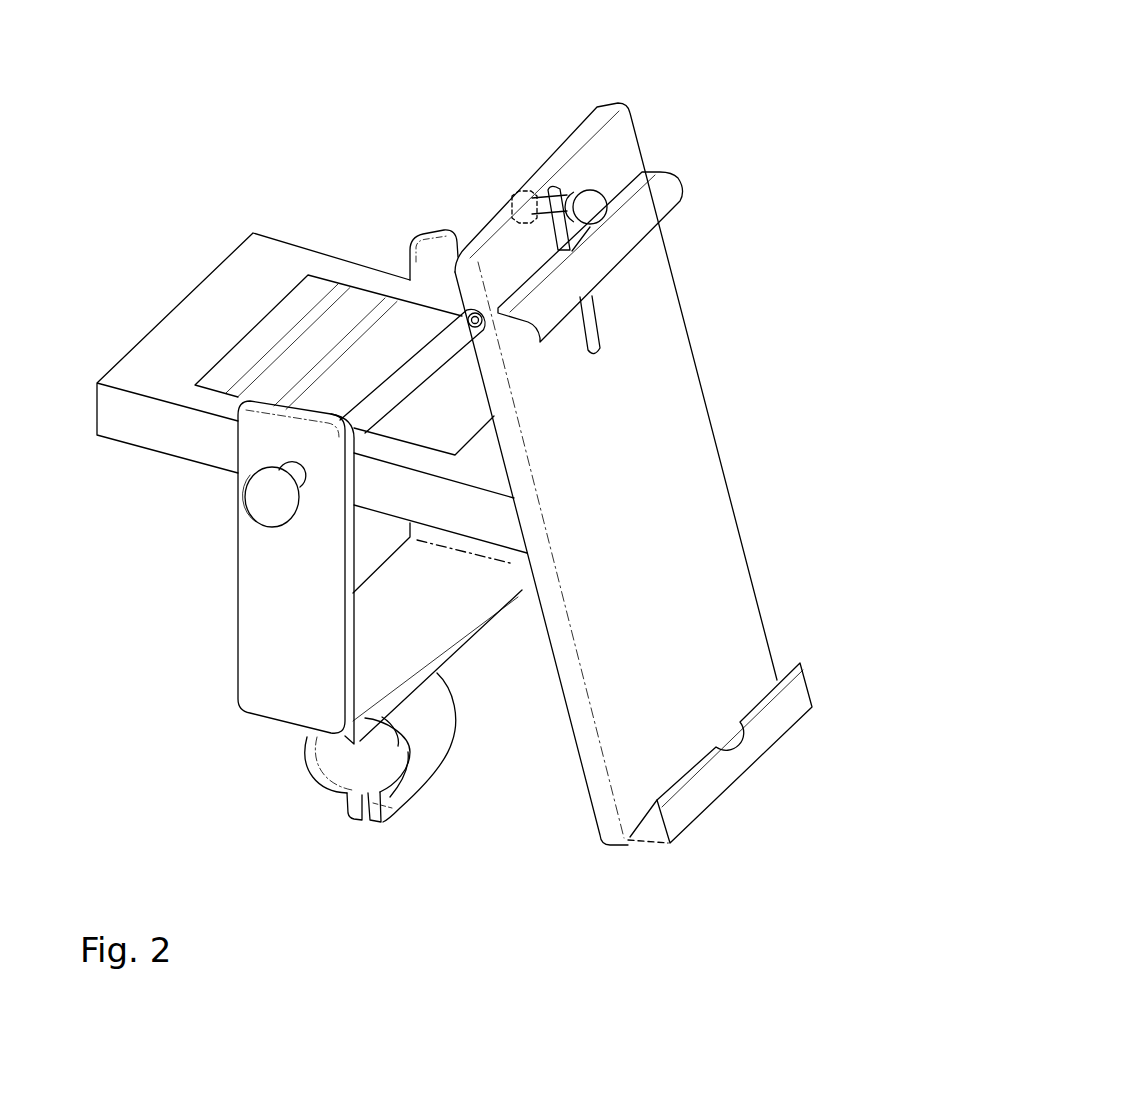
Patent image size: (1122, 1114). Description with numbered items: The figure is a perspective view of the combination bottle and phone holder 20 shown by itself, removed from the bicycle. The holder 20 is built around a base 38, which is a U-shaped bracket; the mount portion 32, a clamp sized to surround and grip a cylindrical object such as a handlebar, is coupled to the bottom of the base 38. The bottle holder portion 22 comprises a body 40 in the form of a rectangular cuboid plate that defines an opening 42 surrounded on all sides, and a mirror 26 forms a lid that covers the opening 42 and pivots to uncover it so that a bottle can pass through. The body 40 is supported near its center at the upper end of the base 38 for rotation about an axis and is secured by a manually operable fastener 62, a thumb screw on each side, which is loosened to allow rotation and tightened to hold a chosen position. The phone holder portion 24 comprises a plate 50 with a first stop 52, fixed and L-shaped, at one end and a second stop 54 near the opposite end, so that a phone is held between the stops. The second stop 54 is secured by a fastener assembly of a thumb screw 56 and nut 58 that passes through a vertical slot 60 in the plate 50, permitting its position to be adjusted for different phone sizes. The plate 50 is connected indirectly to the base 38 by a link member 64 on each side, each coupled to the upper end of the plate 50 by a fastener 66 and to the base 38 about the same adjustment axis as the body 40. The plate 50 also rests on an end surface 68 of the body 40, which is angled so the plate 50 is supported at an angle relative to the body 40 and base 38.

The combination bottle and phone holder 20 is at (684, 73).
The bottle holder portion 22 is at (228, 187).
The phone holder portion 24 is at (727, 348).
The mirror 26 is at (363, 290).
The mount portion 32 is at (402, 838).
The base 38 is at (230, 628).
The body 40 is at (174, 325).
The opening 42 is at (326, 267).
The plate 50 is at (701, 477).
The first stop 52 is at (810, 703).
The second stop 54 is at (693, 198).
The thumb screw 56 is at (593, 181).
The nut 58 is at (515, 196).
The vertical slot 60 is at (610, 336).
The fastener 62 is at (249, 505).
The link member 64 is at (410, 391).
The fastener 66 is at (481, 340).
The end surface 68 is at (512, 540).